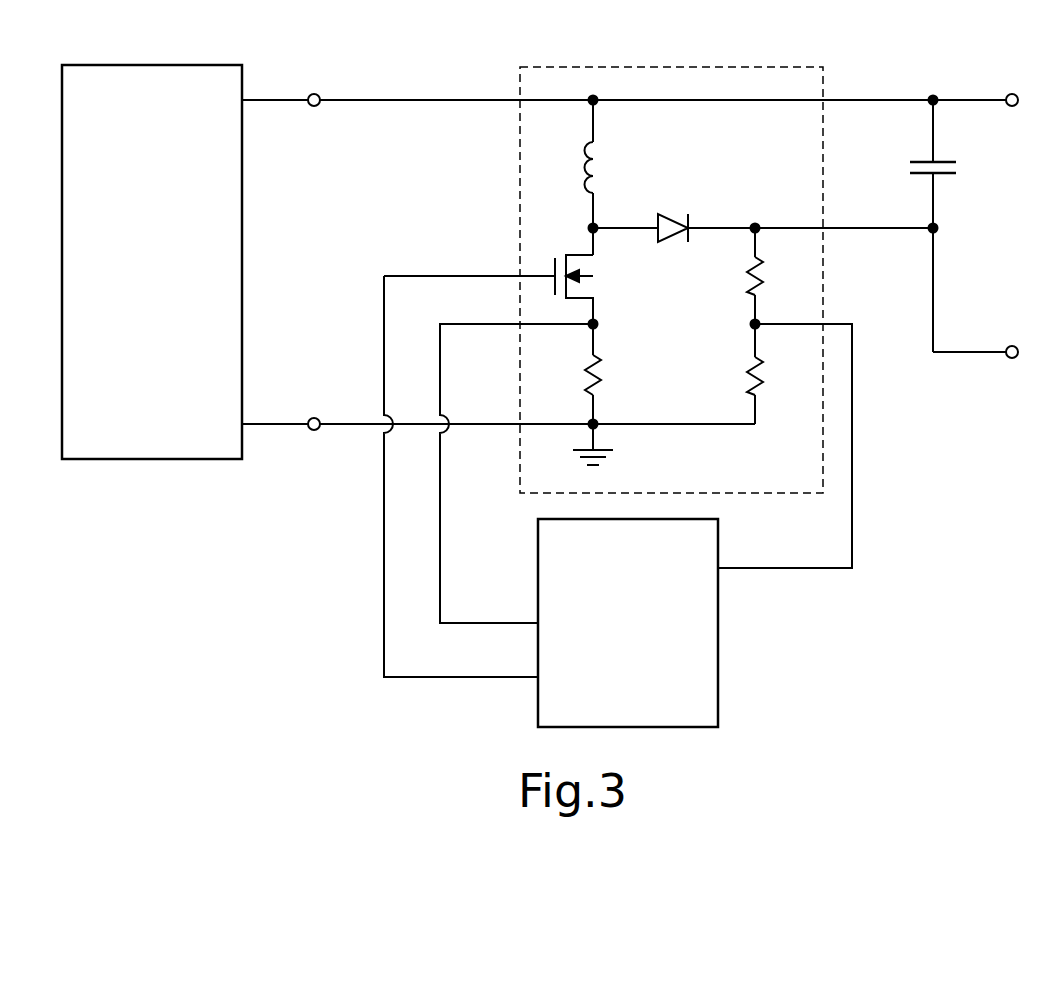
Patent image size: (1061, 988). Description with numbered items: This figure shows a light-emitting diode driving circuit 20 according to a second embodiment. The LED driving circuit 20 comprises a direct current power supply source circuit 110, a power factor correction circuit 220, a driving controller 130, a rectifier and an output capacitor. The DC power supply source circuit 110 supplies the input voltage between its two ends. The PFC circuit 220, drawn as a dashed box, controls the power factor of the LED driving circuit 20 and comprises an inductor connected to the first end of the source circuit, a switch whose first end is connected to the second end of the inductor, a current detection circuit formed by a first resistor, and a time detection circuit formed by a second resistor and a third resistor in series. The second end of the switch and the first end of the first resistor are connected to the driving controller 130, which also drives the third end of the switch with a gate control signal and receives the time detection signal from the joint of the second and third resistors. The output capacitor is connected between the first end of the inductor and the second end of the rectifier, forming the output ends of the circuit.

The LED driving circuit 20 is at (1003, 676).
The direct current power supply source circuit 110 is at (132, 313).
The driving controller 130 is at (609, 665).
The power factor correction circuit 220 is at (775, 67).